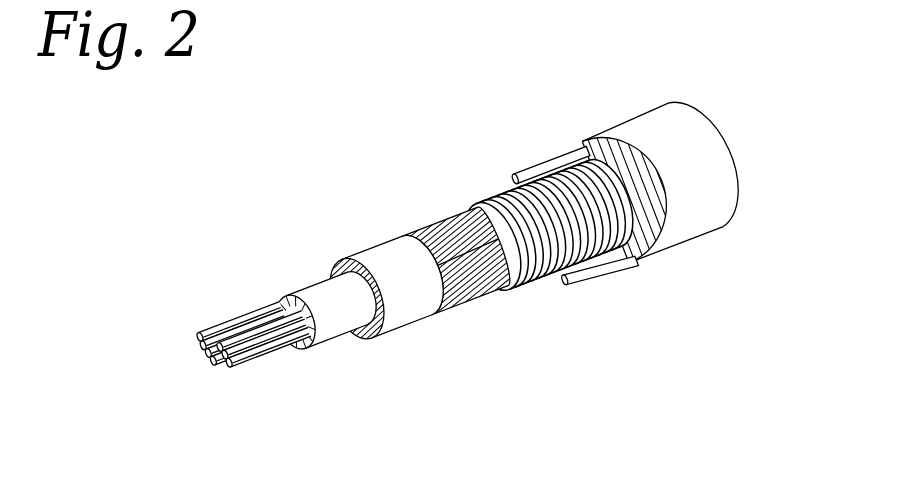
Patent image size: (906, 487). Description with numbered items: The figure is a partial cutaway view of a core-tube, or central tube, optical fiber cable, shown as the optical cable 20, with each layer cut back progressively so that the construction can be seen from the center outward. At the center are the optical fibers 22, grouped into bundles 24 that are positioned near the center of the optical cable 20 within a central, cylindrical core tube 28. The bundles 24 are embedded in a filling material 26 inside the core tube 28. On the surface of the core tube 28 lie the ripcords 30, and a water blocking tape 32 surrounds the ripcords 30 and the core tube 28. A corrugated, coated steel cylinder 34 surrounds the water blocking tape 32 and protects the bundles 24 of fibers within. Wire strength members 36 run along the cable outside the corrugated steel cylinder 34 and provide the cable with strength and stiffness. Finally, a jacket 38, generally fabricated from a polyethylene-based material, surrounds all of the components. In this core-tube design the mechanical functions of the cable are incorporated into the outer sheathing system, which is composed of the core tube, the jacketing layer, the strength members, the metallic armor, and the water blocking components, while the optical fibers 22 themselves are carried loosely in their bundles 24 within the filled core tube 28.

The optical cable 20 is at (484, 234).
The optical fibers 22 is at (217, 373).
The bundles 24 is at (270, 366).
The filling material 26 is at (333, 330).
The core tube 28 is at (402, 324).
The ripcords 30 is at (377, 244).
The water blocking tape 32 is at (425, 225).
The corrugated, coated steel cylinder 34 is at (484, 198).
The wire strength members 36 is at (550, 157).
The jacket 38 is at (706, 236).